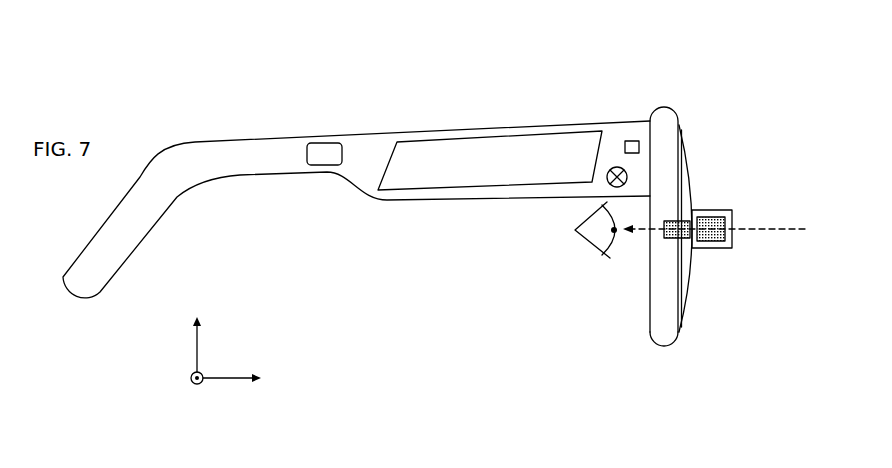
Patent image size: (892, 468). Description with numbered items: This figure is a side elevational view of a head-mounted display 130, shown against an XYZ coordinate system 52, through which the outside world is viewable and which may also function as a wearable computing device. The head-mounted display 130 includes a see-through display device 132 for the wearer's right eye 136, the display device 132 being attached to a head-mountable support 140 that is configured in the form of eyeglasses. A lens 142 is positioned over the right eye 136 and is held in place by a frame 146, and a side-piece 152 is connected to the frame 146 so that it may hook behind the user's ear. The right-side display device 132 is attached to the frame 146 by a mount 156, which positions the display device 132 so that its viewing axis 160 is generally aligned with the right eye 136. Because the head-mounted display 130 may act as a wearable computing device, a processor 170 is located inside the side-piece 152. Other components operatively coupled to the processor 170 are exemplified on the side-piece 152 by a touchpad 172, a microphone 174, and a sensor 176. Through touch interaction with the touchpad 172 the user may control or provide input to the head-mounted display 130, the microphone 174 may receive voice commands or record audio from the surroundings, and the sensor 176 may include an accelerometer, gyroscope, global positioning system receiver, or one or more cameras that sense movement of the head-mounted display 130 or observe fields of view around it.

The XYZ coordinate system 52 is at (222, 380).
The head-mounted display 130 is at (467, 298).
The see-through display device 132 is at (730, 244).
The right eye 136 is at (603, 257).
The head-mountable support 140 is at (674, 104).
The lens 142 is at (690, 143).
The frame 146 is at (672, 346).
The side-piece 152 is at (225, 178).
The mount 156 is at (683, 240).
The viewing axis 160 is at (787, 229).
The processor 170 is at (333, 143).
The touchpad 172 is at (427, 142).
The microphone 174 is at (615, 167).
The sensor 176 is at (632, 141).